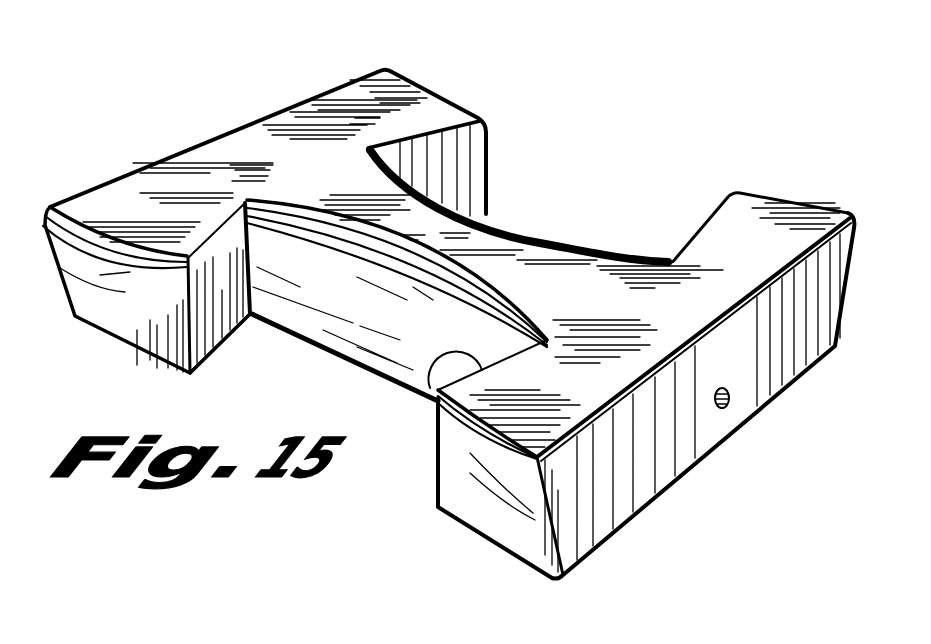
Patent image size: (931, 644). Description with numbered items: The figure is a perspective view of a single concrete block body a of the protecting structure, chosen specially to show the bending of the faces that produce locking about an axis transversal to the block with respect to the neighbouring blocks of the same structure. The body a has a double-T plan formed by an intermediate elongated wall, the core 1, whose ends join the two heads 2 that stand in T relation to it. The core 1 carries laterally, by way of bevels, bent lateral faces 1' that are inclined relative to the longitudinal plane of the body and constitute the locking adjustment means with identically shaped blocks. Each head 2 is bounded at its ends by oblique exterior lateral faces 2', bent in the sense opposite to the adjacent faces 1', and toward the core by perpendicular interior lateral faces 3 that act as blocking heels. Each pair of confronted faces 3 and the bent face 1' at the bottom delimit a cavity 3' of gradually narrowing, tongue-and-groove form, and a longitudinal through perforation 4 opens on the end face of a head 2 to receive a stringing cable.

The body of block a is at (158, 151).
The core of block 1 is at (462, 210).
The bent lateral faces of the core 1' is at (396, 305).
The heads of block 2 is at (542, 322).
The exterior lateral faces of the heads 2' is at (303, 391).
The interior lateral faces of the heads 3 is at (438, 311).
The tongue and groove cavity 3' is at (518, 191).
The longitudinal through perforation 4 is at (717, 412).